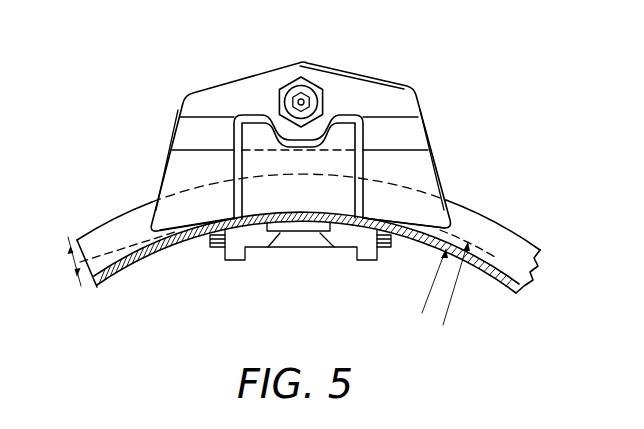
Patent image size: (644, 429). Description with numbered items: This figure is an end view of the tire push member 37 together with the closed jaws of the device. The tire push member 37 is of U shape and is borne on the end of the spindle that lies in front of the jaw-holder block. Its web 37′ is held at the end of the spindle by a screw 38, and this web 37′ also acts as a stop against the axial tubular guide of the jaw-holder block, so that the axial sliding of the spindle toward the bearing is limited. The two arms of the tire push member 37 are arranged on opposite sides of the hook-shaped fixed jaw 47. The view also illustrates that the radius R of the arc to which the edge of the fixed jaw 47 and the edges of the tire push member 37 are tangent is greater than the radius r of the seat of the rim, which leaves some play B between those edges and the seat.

The tire push member 37 is at (229, 66).
The web 37′ is at (390, 102).
The screw 38 is at (313, 90).
The fixed jaw 47 is at (332, 204).
The play B is at (74, 263).
The radius of the seat of the rim r is at (427, 298).
The radius of the arc R is at (446, 316).